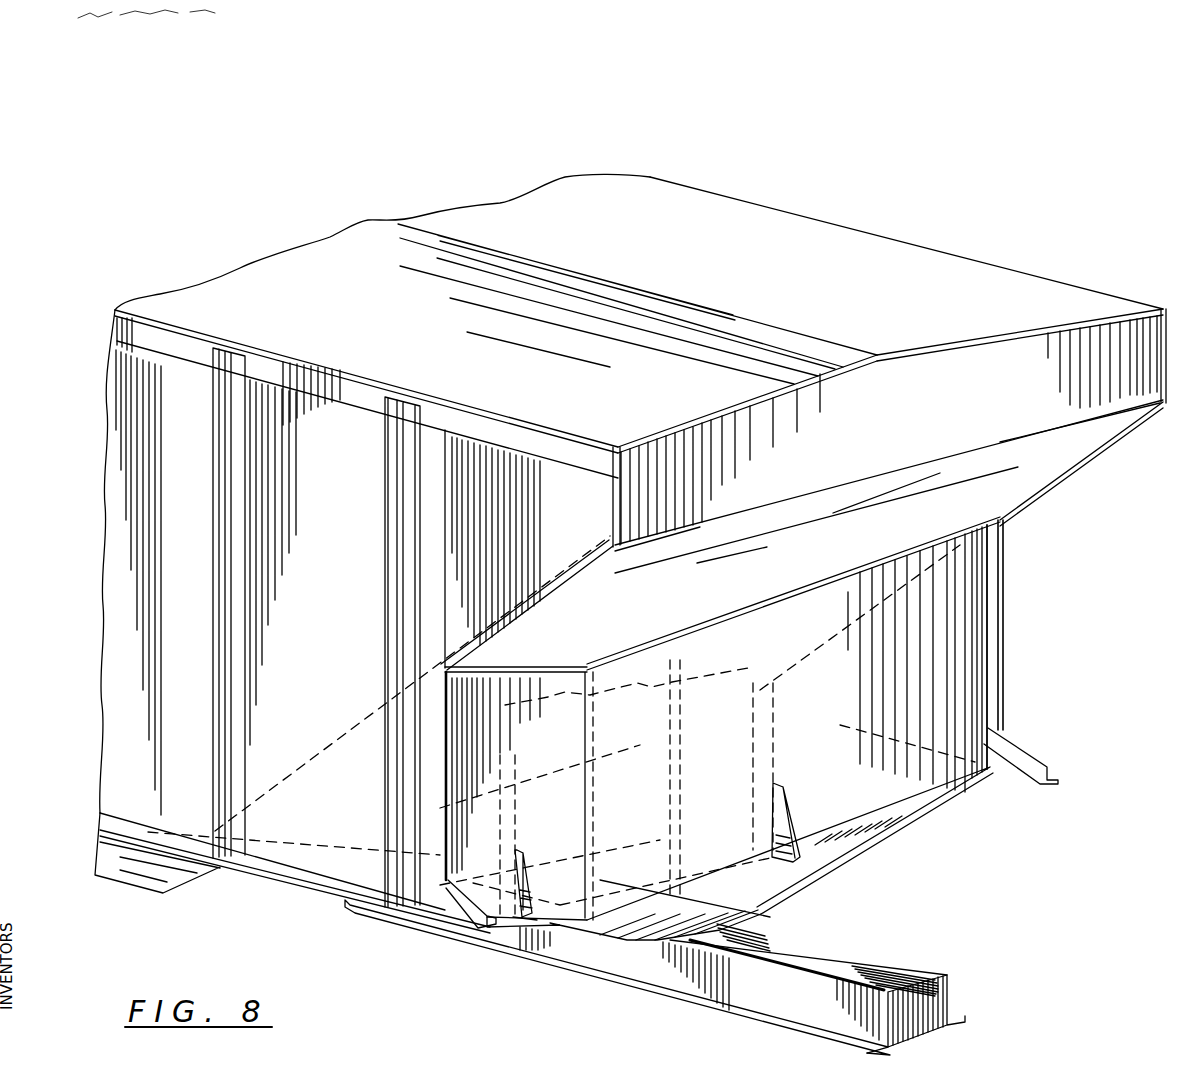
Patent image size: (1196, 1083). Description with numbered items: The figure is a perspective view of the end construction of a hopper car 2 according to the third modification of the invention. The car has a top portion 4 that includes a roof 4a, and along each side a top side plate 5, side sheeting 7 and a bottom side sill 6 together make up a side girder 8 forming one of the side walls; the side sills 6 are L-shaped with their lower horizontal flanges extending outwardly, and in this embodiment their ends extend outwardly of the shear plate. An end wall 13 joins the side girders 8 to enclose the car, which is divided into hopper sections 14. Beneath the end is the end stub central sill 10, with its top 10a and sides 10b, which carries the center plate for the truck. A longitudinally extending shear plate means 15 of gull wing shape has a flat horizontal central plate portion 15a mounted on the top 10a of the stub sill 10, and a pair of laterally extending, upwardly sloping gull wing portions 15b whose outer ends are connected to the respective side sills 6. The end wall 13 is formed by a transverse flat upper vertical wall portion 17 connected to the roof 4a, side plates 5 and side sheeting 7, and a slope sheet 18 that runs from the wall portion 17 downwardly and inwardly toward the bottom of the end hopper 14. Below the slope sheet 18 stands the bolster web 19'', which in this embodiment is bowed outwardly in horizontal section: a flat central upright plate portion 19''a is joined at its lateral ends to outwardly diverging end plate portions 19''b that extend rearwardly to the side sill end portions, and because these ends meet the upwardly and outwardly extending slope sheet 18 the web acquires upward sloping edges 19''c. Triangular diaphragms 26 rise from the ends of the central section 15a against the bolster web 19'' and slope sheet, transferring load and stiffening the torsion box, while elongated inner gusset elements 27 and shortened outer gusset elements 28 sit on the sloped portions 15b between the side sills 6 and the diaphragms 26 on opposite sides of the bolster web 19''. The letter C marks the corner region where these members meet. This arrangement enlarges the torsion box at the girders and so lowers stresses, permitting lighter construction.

The hopper car 2 is at (1027, 882).
The top portion 4 is at (990, 272).
The roof 4a is at (835, 244).
The top side plate 5 is at (360, 395).
The bottom side sill 6 is at (447, 890).
The side sheeting 7 is at (147, 395).
The side girder 8 is at (346, 513).
The end stub central sill 10 is at (952, 994).
The top plate of stub sill 10a is at (868, 960).
The side of stub sill 10b is at (953, 1012).
The end wall 13 is at (1005, 378).
The hopper section 14 is at (207, 872).
The shear plate means 15 is at (889, 838).
The central plate portion 15a is at (720, 930).
The gull wing shear plate portion 15b is at (636, 932).
The upper vertical wall portion 17 is at (903, 370).
The slope sheet 18 is at (837, 497).
The bolster web 19'' is at (779, 750).
The central upright plate portion 19''a is at (889, 543).
The bolster web end plate portion 19''b is at (760, 763).
The upward sloping edge 19''c is at (723, 636).
The diaphragm 26 is at (583, 699).
The inner gusset element 27 is at (517, 773).
The outer gusset element 28 is at (528, 873).
The corner C is at (1047, 403).